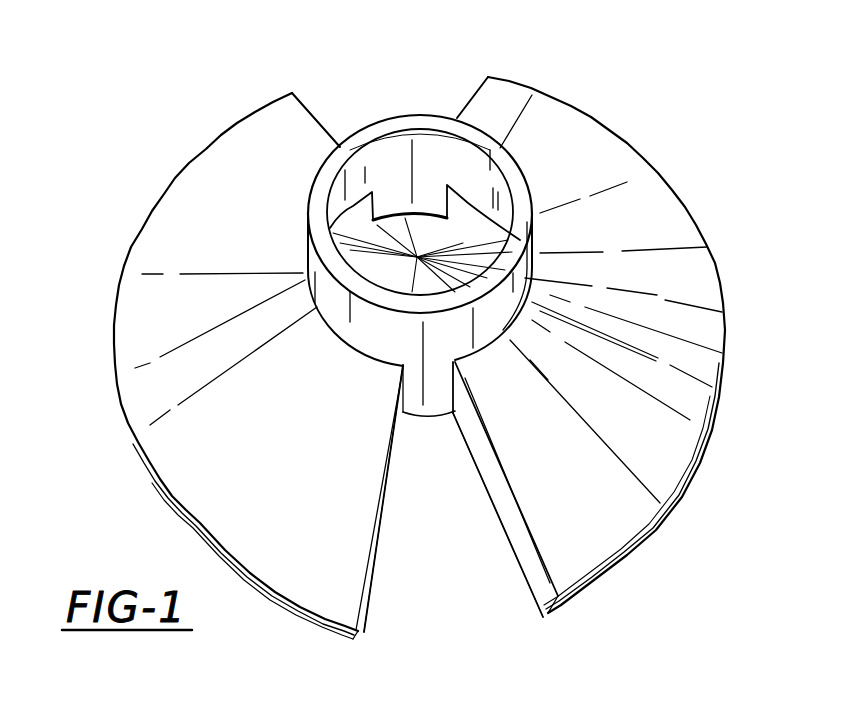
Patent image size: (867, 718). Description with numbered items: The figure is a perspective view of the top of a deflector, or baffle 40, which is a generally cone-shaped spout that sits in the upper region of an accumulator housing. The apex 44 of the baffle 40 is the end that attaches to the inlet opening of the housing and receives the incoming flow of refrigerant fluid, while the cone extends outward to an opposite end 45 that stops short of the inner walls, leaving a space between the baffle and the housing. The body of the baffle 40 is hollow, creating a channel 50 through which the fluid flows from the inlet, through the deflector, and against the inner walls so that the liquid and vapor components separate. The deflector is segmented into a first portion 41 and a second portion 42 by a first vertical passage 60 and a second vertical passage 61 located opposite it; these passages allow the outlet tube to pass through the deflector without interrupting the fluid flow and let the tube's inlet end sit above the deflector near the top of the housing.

The baffle 40 is at (409, 341).
The first portion 41 is at (151, 354).
The second portion 42 is at (683, 278).
The apex 44 is at (386, 122).
The opposite end 45 is at (300, 72).
The channel 50 is at (466, 240).
The first vertical passage 60 is at (432, 72).
The second vertical passage 61 is at (488, 618).